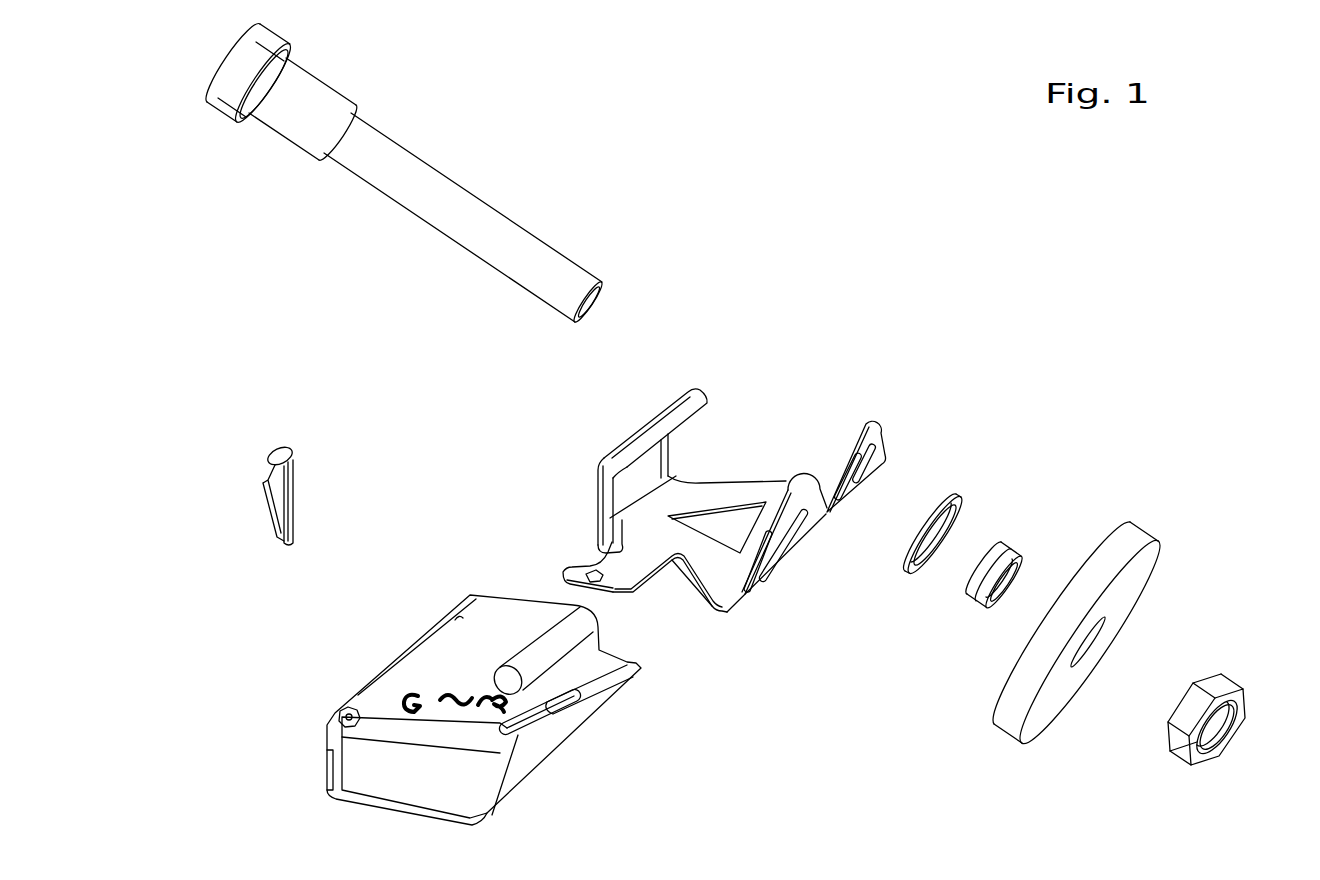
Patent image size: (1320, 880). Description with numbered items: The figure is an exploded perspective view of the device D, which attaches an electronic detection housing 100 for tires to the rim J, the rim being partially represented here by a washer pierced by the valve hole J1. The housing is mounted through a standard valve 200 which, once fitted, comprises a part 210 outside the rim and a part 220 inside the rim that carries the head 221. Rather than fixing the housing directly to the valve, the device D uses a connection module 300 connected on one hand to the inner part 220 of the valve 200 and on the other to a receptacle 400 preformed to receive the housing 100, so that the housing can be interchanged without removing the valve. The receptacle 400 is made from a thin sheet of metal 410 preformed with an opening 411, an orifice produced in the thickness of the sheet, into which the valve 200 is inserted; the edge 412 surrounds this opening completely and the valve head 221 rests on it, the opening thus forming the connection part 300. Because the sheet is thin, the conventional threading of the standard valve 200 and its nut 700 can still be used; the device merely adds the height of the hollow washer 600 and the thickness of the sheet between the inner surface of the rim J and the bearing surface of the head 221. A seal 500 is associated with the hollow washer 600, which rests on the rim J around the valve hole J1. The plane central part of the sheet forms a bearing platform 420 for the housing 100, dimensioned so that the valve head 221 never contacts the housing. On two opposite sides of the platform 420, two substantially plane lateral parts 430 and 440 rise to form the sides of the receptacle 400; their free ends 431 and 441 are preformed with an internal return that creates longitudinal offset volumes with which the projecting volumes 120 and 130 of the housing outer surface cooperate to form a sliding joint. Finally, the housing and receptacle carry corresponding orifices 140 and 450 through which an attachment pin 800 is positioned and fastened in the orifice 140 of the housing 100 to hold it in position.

The electronic detection housing 100 is at (373, 683).
The projecting volume 120 is at (540, 723).
The projecting volume 130 is at (410, 648).
The orifice 140 is at (339, 717).
The valve 200 is at (470, 142).
The outer part of the valve 210 is at (528, 273).
The inner part of the valve 220 is at (300, 130).
The valve head 221 is at (220, 87).
The connection module 300 is at (879, 411).
The receptacle 400 is at (739, 467).
The sheet of metal 410 is at (722, 490).
The opening 411 is at (834, 496).
The edge 412 is at (866, 444).
The bearing platform 420 is at (707, 575).
The lateral part 430 is at (600, 495).
The end of side 431 is at (647, 440).
The lateral part 440 is at (808, 530).
The end of side 441 is at (803, 483).
The orifice 450 is at (577, 568).
The seal 500 is at (1010, 552).
The hollow washer 600 is at (952, 503).
The nut 700 is at (1225, 685).
The attachment pin 800 is at (285, 480).
The rim J is at (1138, 533).
The valve hole J1 is at (1095, 632).
The device D is at (771, 292).